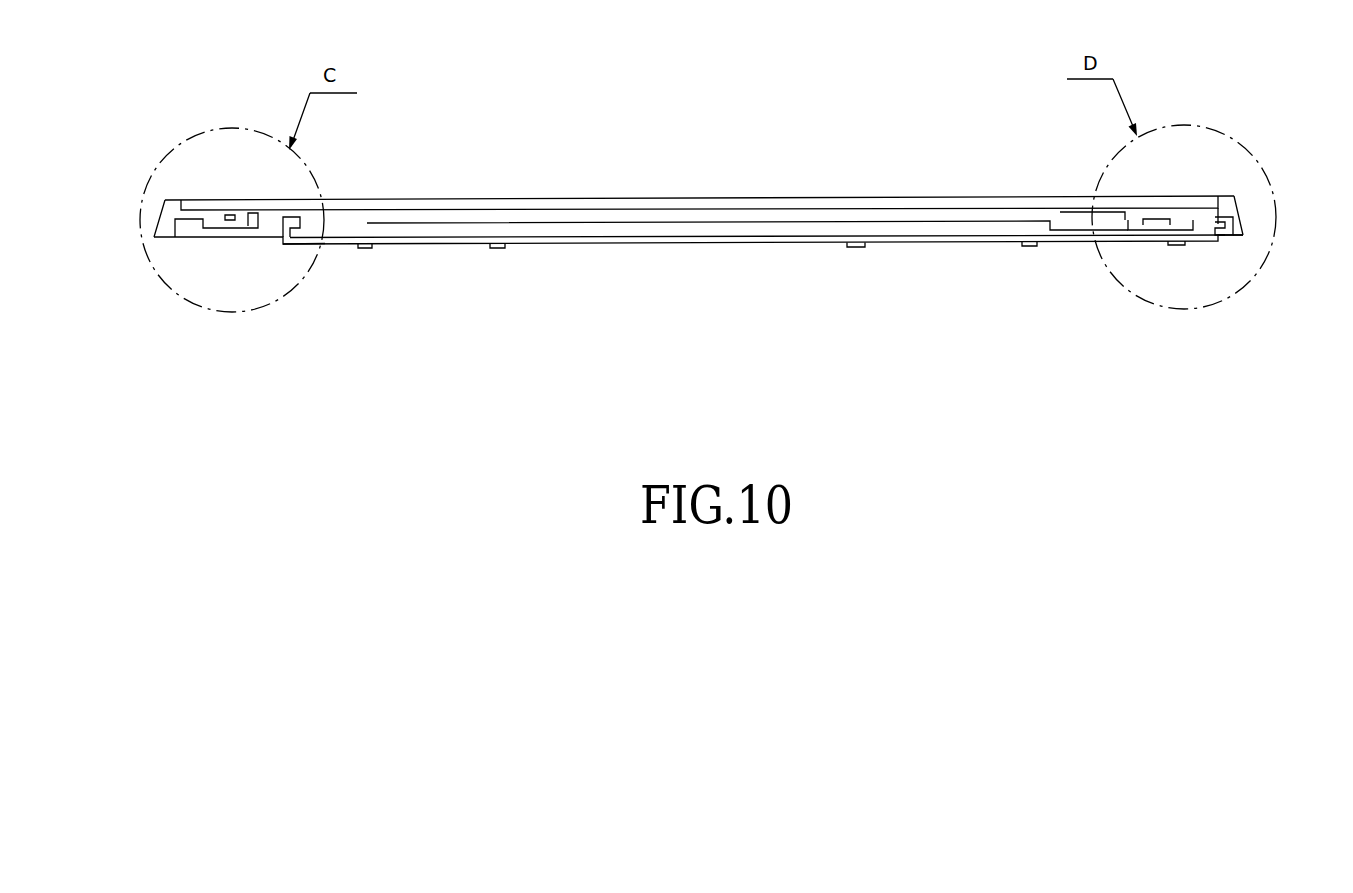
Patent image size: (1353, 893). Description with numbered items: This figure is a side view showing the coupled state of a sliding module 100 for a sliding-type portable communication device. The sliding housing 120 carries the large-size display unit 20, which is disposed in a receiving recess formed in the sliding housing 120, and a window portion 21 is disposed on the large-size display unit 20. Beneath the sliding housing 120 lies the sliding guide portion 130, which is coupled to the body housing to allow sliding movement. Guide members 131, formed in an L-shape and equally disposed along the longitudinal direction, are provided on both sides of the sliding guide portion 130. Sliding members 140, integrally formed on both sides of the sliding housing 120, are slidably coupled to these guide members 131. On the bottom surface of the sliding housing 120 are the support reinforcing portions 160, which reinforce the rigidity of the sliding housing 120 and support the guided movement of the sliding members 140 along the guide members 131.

The sliding module 100 is at (882, 70).
The large-size display unit 20 is at (825, 212).
The window portion 21 is at (713, 200).
The sliding housing 120 is at (158, 219).
The sliding guide portion 130 is at (685, 241).
The guide members 131 is at (291, 216).
The sliding members 140 is at (303, 236).
The support reinforcing portions 160 is at (182, 228).